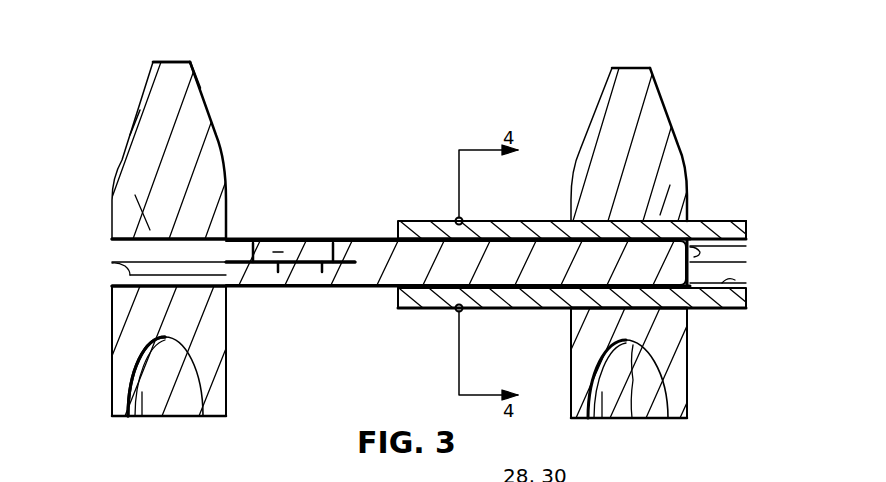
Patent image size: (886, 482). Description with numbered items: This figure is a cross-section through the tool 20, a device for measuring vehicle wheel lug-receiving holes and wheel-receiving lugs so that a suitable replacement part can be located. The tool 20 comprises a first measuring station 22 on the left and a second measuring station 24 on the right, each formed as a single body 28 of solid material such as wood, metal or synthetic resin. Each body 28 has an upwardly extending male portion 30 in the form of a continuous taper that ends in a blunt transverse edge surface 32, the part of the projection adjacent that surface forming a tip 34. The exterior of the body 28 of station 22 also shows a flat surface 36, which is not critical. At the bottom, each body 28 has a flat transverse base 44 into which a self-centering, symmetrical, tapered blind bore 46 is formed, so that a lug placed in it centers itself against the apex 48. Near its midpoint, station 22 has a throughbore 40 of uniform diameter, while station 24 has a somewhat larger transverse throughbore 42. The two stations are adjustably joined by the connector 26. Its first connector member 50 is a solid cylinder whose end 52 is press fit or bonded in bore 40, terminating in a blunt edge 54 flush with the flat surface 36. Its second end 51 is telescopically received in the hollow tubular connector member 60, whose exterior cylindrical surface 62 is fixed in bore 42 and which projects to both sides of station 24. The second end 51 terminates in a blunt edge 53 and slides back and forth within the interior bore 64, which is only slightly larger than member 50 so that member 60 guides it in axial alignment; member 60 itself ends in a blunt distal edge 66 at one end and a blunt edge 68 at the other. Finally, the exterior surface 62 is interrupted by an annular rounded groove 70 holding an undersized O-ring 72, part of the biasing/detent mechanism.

The tool 20 is at (405, 58).
The first measuring station 22 is at (150, 62).
The second measuring station 24 is at (660, 70).
The connector 26 is at (317, 305).
The body 28 is at (135, 335).
The male portion 30 is at (140, 108).
The transverse edge surface 32 is at (178, 64).
The tip 34 is at (190, 66).
The flat surface 36 is at (112, 290).
The throughbore 40 is at (115, 272).
The throughbore 42 is at (690, 306).
The base 44 is at (220, 418).
The blind bore 46 is at (152, 418).
The apex 48 is at (185, 347).
The first connector member 50 is at (268, 240).
The second end 51 is at (652, 221).
The end 52 is at (150, 238).
The blunt edge 53 is at (704, 220).
The blunt edge 54 is at (112, 246).
The hollow tubular connector member 60 is at (540, 310).
The exterior cylindrical surface 62 is at (498, 221).
The interior bore 64 is at (748, 280).
The distal edge 66 is at (748, 235).
The blunt edge 68 is at (398, 297).
The annular rounded groove 70 is at (403, 312).
The O-ring 72 is at (459, 312).